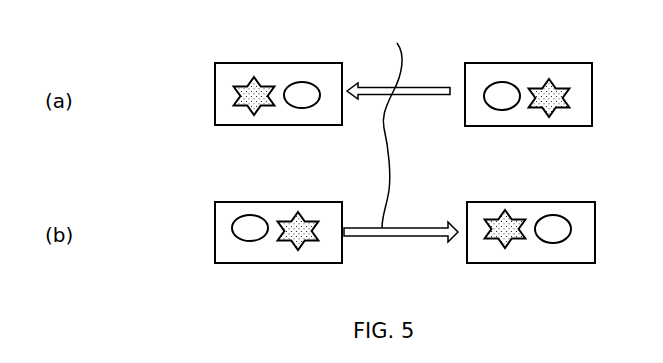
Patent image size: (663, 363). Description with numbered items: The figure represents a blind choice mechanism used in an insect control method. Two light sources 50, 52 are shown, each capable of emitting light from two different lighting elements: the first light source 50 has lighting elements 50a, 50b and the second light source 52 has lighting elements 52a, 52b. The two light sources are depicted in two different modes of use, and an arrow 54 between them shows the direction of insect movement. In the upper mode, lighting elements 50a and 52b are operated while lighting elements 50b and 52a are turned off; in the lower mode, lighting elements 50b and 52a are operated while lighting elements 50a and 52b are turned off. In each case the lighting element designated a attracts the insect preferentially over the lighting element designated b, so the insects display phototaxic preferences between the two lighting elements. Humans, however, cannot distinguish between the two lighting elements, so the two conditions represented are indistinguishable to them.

The light source 50 is at (232, 63).
The lighting element 50a is at (245, 215).
The lighting element 50b is at (300, 108).
The light source 52 is at (540, 63).
The lighting element 52a is at (504, 209).
The lighting element 52b is at (557, 215).
The arrow 54 is at (377, 87).